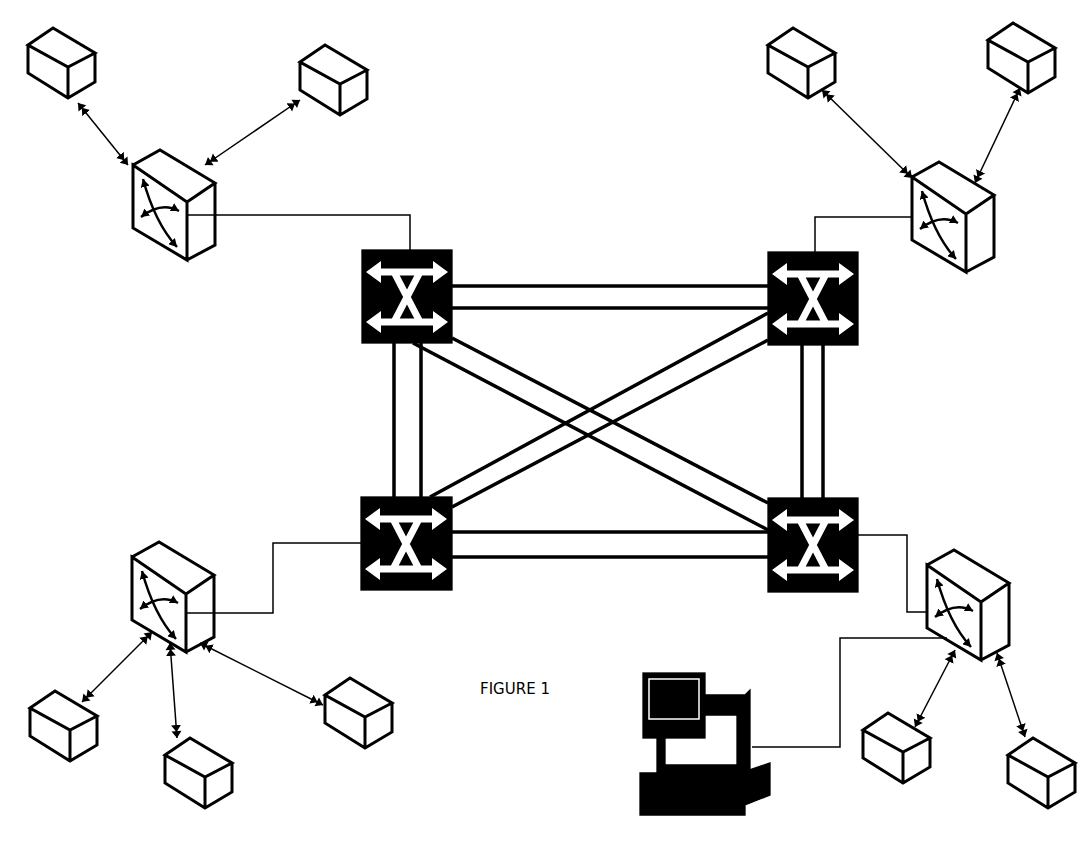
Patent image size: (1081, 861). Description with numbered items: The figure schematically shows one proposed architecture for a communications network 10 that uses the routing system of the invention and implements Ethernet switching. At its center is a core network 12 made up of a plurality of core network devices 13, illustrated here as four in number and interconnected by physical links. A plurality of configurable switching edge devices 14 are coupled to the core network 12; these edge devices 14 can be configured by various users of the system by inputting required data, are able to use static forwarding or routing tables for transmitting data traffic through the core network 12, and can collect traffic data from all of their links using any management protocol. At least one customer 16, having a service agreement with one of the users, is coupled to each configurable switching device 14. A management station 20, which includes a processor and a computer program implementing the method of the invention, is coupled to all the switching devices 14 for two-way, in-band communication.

The network 10 is at (600, 98).
The core network 12 is at (613, 287).
The core network devices 13 is at (378, 348).
The configurable switching edge devices 14 is at (215, 222).
The customer 16 is at (835, 70).
The management station 20 is at (755, 715).